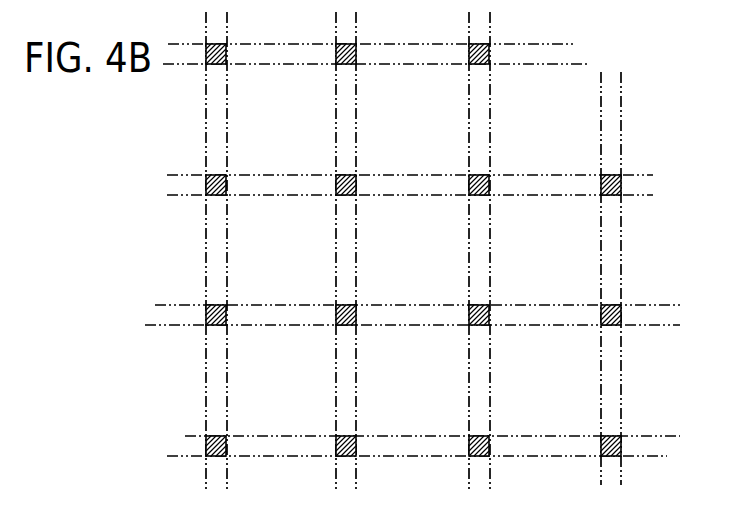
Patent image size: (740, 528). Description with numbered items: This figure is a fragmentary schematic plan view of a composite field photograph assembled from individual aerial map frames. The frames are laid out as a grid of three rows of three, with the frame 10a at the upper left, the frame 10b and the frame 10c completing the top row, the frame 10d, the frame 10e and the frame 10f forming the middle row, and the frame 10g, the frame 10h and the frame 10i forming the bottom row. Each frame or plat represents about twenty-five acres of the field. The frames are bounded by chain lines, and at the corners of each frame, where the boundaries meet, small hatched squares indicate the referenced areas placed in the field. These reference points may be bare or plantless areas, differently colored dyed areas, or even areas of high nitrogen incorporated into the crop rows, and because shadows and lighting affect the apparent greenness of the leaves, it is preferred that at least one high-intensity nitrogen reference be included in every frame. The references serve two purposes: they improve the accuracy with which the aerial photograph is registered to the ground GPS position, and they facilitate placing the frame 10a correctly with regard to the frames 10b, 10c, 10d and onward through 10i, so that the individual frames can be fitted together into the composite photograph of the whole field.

The frame 10a is at (263, 133).
The frame 10b is at (395, 133).
The frame 10c is at (528, 133).
The frame 10d is at (263, 265).
The frame 10e is at (395, 265).
The frame 10f is at (528, 265).
The frame 10g is at (265, 397).
The frame 10h is at (395, 397).
The frame 10i is at (528, 397).